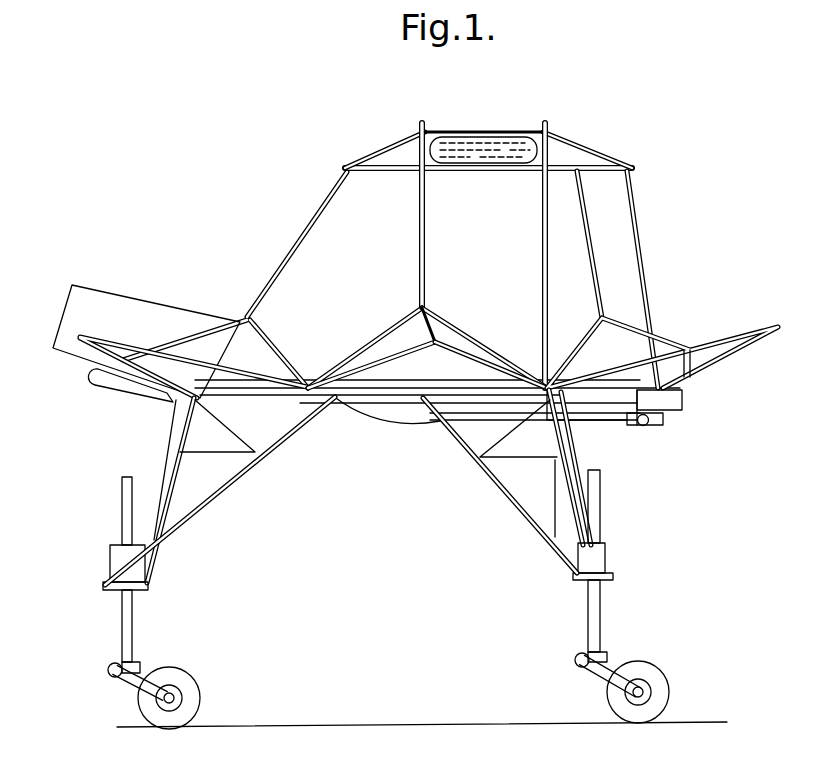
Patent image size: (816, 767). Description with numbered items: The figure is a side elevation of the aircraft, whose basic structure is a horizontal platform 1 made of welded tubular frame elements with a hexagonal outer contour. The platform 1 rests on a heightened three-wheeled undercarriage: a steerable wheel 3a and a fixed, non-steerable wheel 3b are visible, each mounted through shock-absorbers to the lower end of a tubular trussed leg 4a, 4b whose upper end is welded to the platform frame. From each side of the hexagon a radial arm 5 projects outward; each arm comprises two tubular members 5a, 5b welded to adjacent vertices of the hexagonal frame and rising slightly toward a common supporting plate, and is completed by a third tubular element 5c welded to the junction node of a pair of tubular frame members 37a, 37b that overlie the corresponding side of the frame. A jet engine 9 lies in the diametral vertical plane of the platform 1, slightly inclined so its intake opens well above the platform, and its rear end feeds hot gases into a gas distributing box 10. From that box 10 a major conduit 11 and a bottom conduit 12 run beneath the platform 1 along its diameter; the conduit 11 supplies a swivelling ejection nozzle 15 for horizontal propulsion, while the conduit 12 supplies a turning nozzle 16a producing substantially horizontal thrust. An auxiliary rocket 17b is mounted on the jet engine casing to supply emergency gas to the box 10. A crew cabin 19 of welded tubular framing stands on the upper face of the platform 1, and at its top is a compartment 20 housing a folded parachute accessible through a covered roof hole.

The horizontal platform 1 is at (456, 400).
The steerable wheel 3a is at (186, 682).
The non-steerable wheel 3b is at (657, 678).
The leg 4a is at (223, 468).
The leg 4b is at (520, 450).
The radial arm 5 is at (686, 352).
The tubular member 5a is at (357, 367).
The tubular member 5b is at (492, 364).
The third tubular element 5c is at (432, 311).
The jet engine 9 is at (178, 312).
The gas distributing box 10 is at (393, 403).
The conduit 11 is at (608, 402).
The conduit 12 is at (350, 411).
The ejection nozzle 15 is at (686, 400).
The turning nozzle 16a is at (664, 424).
The rocket 17b is at (138, 389).
The cockpit or crew cabin 19 is at (636, 224).
The compartment 20 is at (477, 142).
The tubular frame member 37a is at (383, 333).
The tubular frame member 37b is at (463, 333).